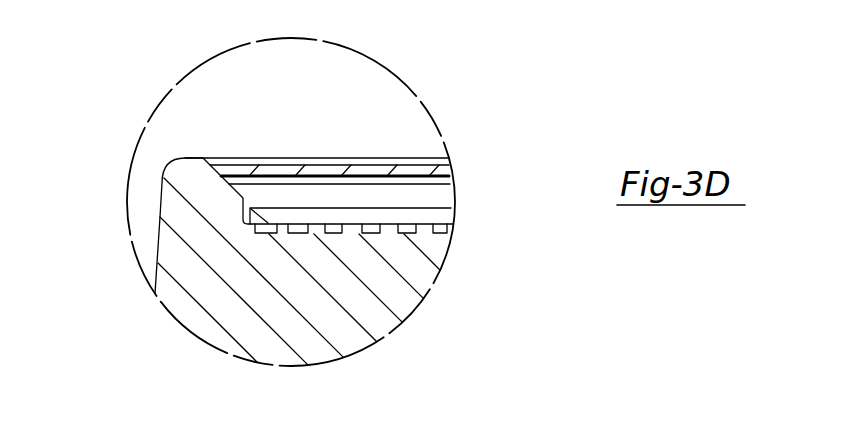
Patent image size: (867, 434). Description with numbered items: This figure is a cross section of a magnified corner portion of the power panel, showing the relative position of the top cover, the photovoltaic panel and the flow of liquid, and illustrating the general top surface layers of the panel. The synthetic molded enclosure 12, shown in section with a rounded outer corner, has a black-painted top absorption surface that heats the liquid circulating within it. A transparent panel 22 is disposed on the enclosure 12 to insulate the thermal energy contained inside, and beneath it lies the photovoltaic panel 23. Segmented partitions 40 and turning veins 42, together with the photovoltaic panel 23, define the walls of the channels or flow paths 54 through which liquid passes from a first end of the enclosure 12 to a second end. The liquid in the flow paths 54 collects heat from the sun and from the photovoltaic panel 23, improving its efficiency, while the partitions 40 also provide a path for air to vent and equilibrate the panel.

The enclosure 12 is at (157, 235).
The transparent panel 22 is at (448, 164).
The photovoltaic panel 23 is at (448, 215).
The turning veins 42 is at (372, 233).
The segmented partitions 40 is at (298, 230).
The flow paths 54 is at (338, 230).